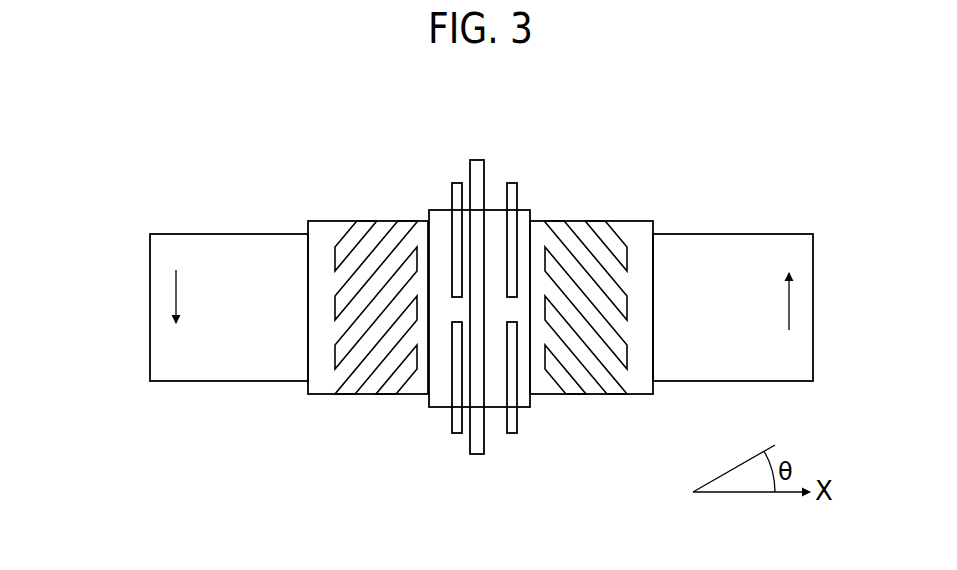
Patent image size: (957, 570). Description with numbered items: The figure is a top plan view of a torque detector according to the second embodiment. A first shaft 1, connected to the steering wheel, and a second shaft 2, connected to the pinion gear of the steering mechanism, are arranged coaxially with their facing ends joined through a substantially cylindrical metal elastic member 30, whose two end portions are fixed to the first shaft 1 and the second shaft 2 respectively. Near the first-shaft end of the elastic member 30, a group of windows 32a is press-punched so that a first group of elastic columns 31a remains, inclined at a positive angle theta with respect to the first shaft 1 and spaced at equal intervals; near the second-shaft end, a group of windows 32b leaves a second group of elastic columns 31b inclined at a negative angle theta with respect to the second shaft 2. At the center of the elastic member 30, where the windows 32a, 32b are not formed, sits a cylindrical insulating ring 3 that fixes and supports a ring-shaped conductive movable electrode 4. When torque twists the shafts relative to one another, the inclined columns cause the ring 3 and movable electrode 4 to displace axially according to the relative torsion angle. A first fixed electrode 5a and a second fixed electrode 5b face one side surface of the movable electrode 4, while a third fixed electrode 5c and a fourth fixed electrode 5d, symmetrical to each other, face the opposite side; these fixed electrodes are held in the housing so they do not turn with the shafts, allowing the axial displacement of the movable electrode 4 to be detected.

The first shaft 1 is at (173, 238).
The second shaft 2 is at (777, 240).
The ring 3 is at (428, 400).
The movable electrode 4 is at (448, 172).
The first fixed electrode 5a is at (453, 195).
The second fixed electrode 5b is at (455, 428).
The third fixed electrode 5c is at (513, 427).
The fourth fixed electrode 5d is at (513, 190).
The elastic member 30 is at (323, 393).
The first group of elastic columns 31a is at (367, 246).
The group of windows 32a is at (340, 297).
The second group of elastic columns 31b is at (597, 243).
The group of windows 32b is at (623, 301).